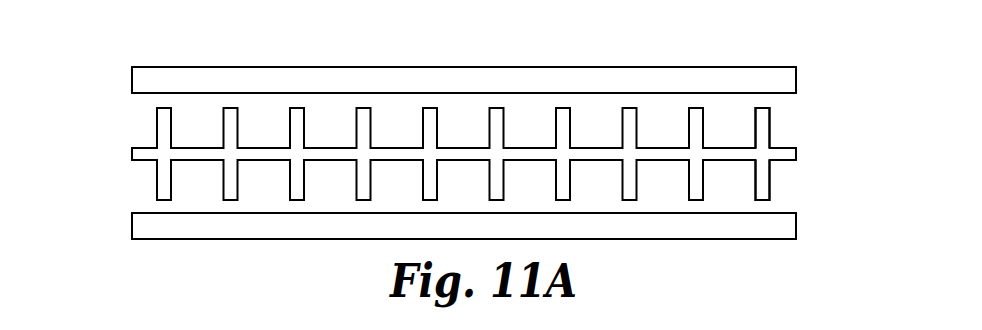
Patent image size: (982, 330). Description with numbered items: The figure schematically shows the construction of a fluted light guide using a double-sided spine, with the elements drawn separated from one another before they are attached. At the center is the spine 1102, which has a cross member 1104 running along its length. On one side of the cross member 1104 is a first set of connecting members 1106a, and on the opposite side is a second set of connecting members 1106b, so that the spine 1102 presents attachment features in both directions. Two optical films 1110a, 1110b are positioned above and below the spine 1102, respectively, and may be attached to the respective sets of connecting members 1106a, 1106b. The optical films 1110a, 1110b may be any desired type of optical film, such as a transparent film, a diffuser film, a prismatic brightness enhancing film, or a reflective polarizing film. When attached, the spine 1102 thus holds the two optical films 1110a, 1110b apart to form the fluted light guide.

The spine 1102 is at (132, 152).
The cross member 1104 is at (146, 146).
The connecting members 1106a is at (770, 129).
The connecting members 1106b is at (770, 183).
The optical film 1110a is at (208, 67).
The optical film 1110b is at (210, 239).